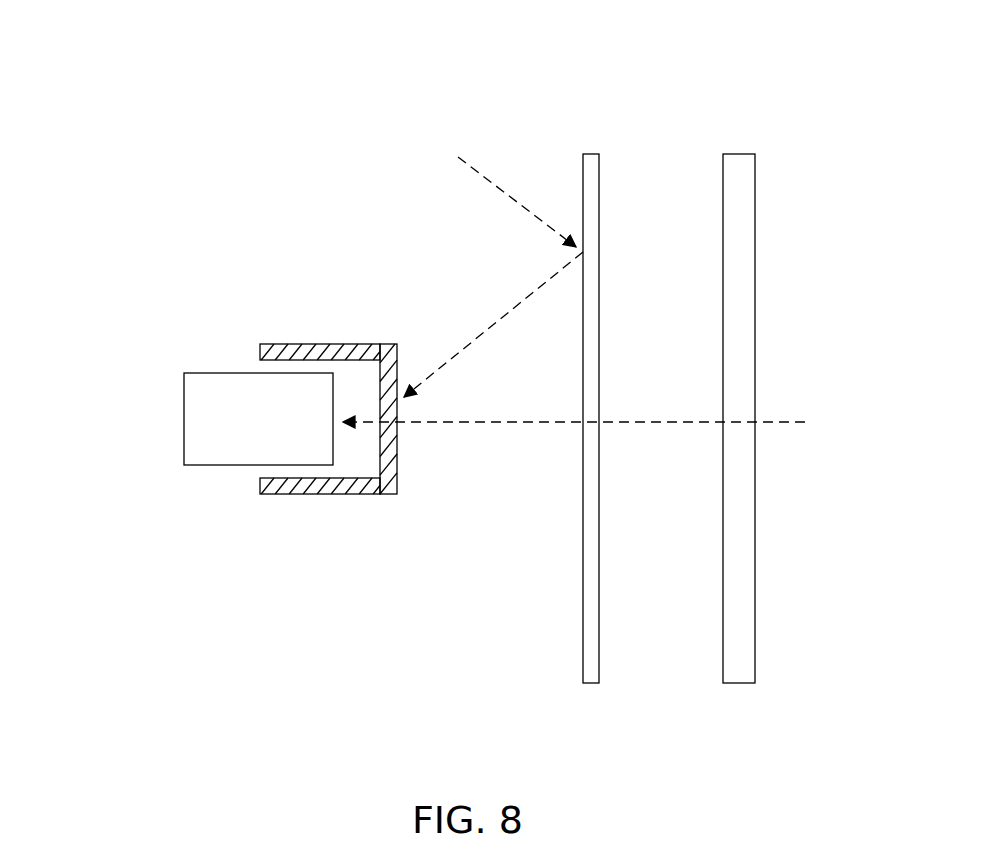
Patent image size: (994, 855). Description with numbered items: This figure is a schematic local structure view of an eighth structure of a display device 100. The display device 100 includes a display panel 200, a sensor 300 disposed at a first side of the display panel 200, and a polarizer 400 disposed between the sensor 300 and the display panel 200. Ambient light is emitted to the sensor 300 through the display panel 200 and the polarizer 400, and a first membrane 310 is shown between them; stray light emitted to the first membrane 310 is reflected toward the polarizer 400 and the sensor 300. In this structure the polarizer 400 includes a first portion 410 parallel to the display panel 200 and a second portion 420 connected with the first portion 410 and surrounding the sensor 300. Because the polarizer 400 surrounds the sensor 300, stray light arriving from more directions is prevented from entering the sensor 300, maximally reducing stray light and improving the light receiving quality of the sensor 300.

The display device 100 is at (130, 45).
The display panel 200 is at (722, 169).
The sensor 300 is at (235, 467).
The first membrane 310 is at (582, 177).
The polarizer 400 is at (328, 454).
The first portion 410 is at (388, 495).
The second portion 420 is at (328, 342).